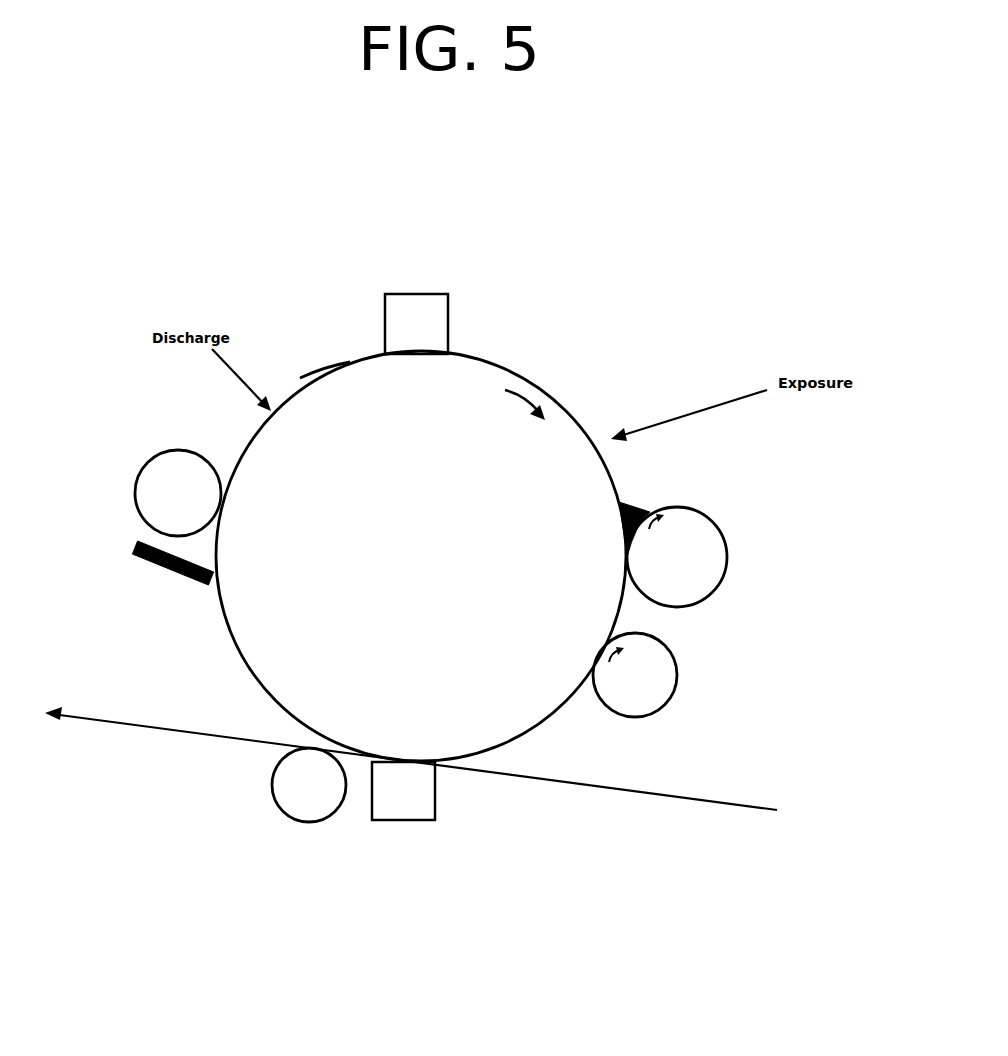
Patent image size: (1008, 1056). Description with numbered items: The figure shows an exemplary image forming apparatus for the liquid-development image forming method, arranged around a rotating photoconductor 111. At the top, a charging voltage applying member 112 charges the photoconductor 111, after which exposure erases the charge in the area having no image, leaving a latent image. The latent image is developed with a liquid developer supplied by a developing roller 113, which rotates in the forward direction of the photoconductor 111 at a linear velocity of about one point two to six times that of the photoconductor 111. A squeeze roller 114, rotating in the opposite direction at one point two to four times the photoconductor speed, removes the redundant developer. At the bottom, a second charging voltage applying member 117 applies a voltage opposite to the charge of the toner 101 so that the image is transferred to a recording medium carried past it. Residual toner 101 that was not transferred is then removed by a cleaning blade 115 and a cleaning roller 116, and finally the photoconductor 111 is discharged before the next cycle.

The toner 101 is at (451, 556).
The photoconductor 111 is at (324, 377).
The charging voltage applying member 112 is at (422, 293).
The developing roller 113 is at (727, 553).
The squeeze roller 114 is at (677, 693).
The cleaning blade 115 is at (160, 563).
The cleaning roller 116 is at (152, 459).
The charging voltage applying member 117 is at (407, 821).